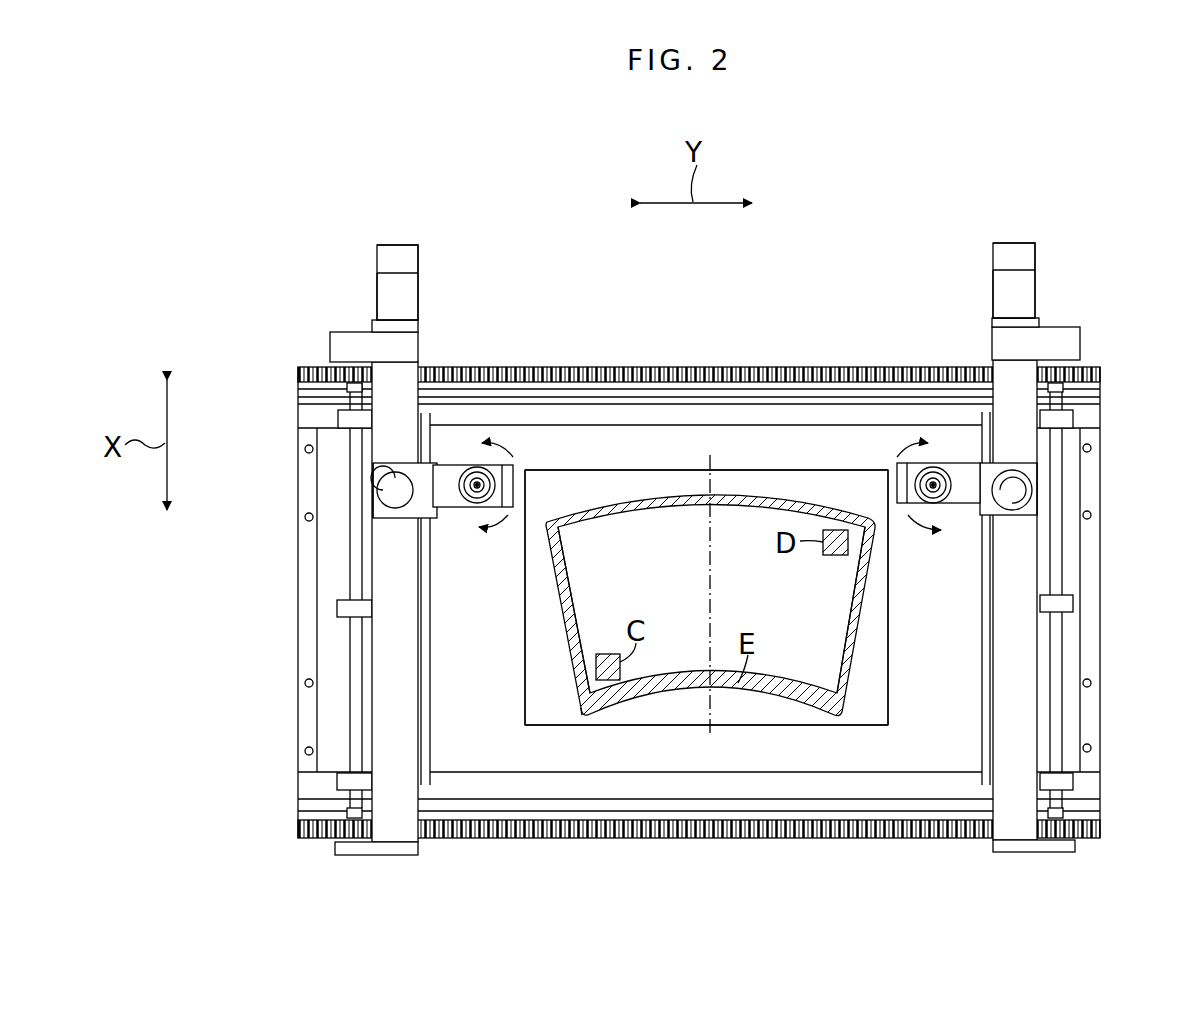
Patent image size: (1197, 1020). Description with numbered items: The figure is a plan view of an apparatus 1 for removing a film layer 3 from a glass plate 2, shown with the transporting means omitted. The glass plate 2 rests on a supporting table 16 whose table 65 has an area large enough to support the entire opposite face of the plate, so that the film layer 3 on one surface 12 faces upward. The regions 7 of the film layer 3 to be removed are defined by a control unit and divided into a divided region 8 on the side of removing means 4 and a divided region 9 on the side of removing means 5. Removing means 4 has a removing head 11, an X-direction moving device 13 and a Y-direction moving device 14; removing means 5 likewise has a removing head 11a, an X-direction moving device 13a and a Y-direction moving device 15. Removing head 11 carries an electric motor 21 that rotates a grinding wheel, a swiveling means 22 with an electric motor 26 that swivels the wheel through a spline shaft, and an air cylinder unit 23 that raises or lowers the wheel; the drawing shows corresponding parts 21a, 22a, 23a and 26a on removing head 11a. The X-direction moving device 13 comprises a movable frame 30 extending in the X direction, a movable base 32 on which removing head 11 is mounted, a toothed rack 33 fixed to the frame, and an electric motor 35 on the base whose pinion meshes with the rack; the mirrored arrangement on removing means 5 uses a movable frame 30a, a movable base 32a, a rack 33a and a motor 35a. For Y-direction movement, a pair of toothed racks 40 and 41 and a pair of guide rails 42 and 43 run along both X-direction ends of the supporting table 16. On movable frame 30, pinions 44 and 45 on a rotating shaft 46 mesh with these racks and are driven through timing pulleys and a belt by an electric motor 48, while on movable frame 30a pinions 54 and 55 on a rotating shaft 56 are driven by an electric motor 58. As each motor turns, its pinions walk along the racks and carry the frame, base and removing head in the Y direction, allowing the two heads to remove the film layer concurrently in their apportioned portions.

The apparatus for removing a film layer on a glass plate 1 is at (1042, 182).
The glass plate 2 is at (880, 688).
The film layer 3 is at (873, 715).
The removing means 4 is at (393, 236).
The removing means 5 is at (991, 231).
The regions of the film layer to be removed 7 is at (570, 597).
The divided region 8 is at (600, 690).
The divided region 9 is at (860, 597).
The removing head 11 is at (470, 532).
The removing head 11a is at (889, 451).
The one surface of the glass plate 12 is at (882, 642).
The X-direction moving device 13 is at (378, 520).
The X-direction moving device 13a is at (1022, 526).
The Y-direction moving device 14 is at (424, 241).
The Y-direction moving device 15 is at (1034, 227).
The supporting table 16 is at (838, 790).
The electric motor 21 is at (527, 472).
The second holding plate 21a is at (887, 472).
The swiveling means 22 is at (458, 510).
The second shaft 22a is at (940, 505).
The air cylinder unit 23 is at (452, 505).
The second bearing block 23a is at (962, 466).
The electric motor 26 is at (475, 483).
The second rotation axis 26a is at (934, 483).
The movable frame 30 is at (398, 835).
The movable frame 30a is at (1020, 827).
The movable base 32 is at (373, 470).
The movable base 32a is at (1038, 470).
The toothed rack 33 is at (405, 715).
The second rack 33a is at (1005, 713).
The electric motor 35 is at (377, 490).
The second pinion shaft 35a is at (1035, 490).
The toothed rack 40 is at (602, 368).
The toothed rack 41 is at (562, 837).
The guide rail 42 is at (656, 400).
The guide rail 43 is at (692, 805).
The pinion 44 is at (318, 375).
The pinion 45 is at (333, 840).
The rotating shaft 46 is at (350, 636).
The electric motor 48 is at (383, 292).
The pinion 54 is at (1102, 375).
The pinion 55 is at (1082, 837).
The rotating shaft 56 is at (1058, 640).
The electric motor 58 is at (1033, 288).
The table 65 is at (917, 765).